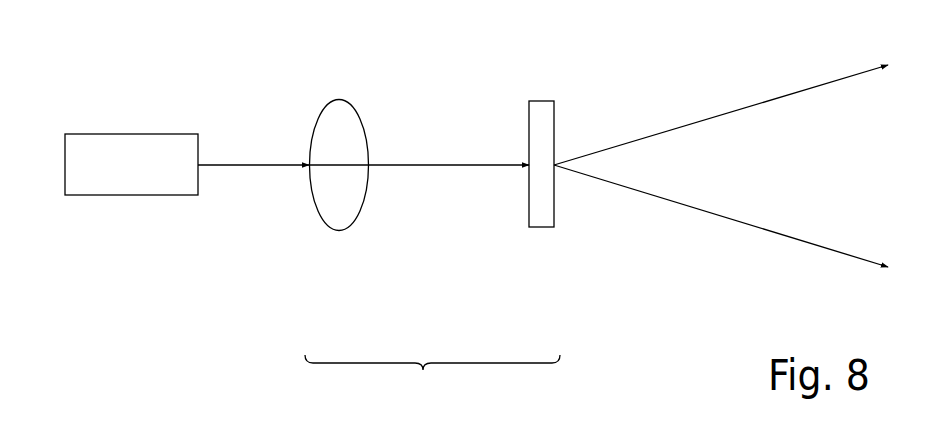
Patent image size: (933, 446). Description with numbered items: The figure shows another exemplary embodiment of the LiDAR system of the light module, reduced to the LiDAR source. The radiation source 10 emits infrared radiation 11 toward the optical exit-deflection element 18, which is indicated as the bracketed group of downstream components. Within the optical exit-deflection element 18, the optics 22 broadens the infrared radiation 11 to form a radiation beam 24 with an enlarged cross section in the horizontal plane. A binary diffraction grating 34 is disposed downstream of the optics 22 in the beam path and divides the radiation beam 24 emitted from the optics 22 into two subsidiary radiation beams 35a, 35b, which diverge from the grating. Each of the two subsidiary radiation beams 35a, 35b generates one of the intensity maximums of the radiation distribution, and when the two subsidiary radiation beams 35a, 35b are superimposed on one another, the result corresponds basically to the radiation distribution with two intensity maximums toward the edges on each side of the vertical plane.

The radiation source 10 is at (147, 176).
The infrared radiation 11 is at (250, 163).
The first optics 22 is at (340, 115).
The radiation beam 24 is at (443, 163).
The binary diffraction grating 34 is at (544, 218).
The subsidiary radiation beam 35a is at (780, 97).
The subsidiary radiation beam 35b is at (722, 213).
The optical exit-deflection element 18 is at (432, 378).